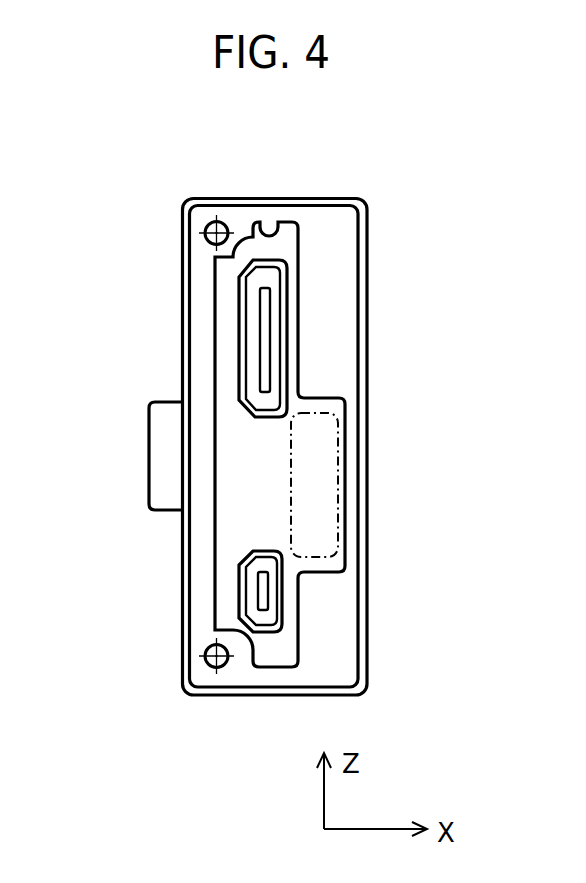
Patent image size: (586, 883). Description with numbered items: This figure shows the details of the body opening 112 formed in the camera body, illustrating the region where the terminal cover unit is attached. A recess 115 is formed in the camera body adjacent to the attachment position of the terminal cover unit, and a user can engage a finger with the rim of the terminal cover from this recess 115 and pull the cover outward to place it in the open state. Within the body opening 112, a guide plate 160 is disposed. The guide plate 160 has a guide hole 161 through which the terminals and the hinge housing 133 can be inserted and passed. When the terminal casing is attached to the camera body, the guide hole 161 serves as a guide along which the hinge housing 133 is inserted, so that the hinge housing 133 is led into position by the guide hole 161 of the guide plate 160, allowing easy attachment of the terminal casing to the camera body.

The body opening 112 is at (182, 267).
The recess 115 is at (165, 420).
The hinge housing 133 is at (338, 440).
The guide plate 160 is at (322, 220).
The guide hole 161 is at (270, 230).